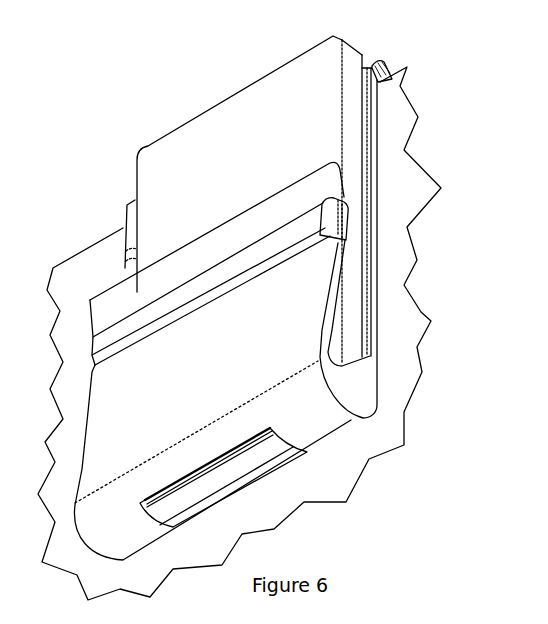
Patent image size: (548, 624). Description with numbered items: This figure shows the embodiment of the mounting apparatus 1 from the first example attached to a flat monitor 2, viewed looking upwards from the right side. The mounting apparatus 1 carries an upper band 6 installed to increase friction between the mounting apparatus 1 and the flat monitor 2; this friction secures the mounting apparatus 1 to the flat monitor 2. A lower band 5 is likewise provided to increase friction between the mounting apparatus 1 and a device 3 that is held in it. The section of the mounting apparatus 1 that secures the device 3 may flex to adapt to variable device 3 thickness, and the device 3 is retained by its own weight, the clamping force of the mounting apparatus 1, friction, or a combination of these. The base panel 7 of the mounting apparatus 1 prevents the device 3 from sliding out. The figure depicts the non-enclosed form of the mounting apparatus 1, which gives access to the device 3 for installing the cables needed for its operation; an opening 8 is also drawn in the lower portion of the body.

The mounting apparatus 1 is at (97, 420).
The flat monitor 2 is at (396, 97).
The device 3 is at (354, 233).
The lower band 5 is at (110, 340).
The upper band 6 is at (384, 64).
The base panel 7 is at (357, 380).
The slot 8 is at (230, 459).